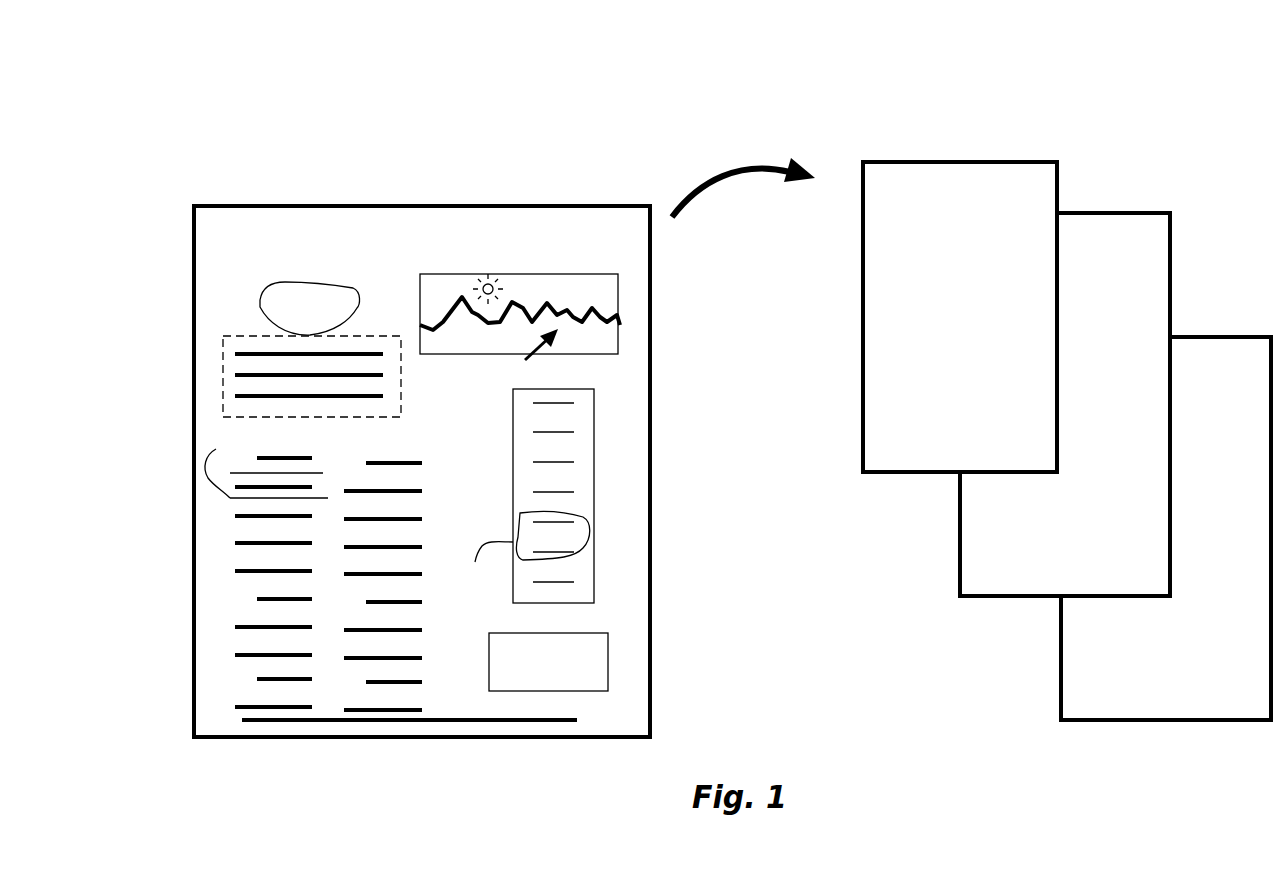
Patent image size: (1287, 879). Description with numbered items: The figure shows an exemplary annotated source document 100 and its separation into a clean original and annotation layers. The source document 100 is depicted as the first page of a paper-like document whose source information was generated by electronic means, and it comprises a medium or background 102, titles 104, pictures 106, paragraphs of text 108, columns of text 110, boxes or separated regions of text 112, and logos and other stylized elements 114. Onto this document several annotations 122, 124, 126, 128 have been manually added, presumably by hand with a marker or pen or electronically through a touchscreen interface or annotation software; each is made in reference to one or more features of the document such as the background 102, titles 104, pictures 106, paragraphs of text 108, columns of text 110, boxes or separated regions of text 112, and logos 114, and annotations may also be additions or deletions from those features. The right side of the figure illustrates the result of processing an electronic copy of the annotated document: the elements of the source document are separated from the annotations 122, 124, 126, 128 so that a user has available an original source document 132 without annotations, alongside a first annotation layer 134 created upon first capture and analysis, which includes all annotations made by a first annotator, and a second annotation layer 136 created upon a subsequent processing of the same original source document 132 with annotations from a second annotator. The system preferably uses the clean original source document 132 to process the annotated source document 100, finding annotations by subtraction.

The source document 100 is at (411, 96).
The medium or background 102 is at (485, 205).
The titles 104 is at (355, 287).
The pictures 106 is at (618, 275).
The paragraphs of text 108 is at (223, 337).
The columns of text 110 is at (250, 655).
The boxes or separated regions of text 112 is at (593, 473).
The logos and other stylized elements 114 is at (607, 662).
The annotation 122 is at (277, 254).
The annotation 124 is at (517, 377).
The annotation 126 is at (445, 612).
The annotation 128 is at (215, 447).
The original source document 132 is at (960, 317).
The first annotation layer 134 is at (1065, 404).
The second annotation layer 136 is at (1166, 528).